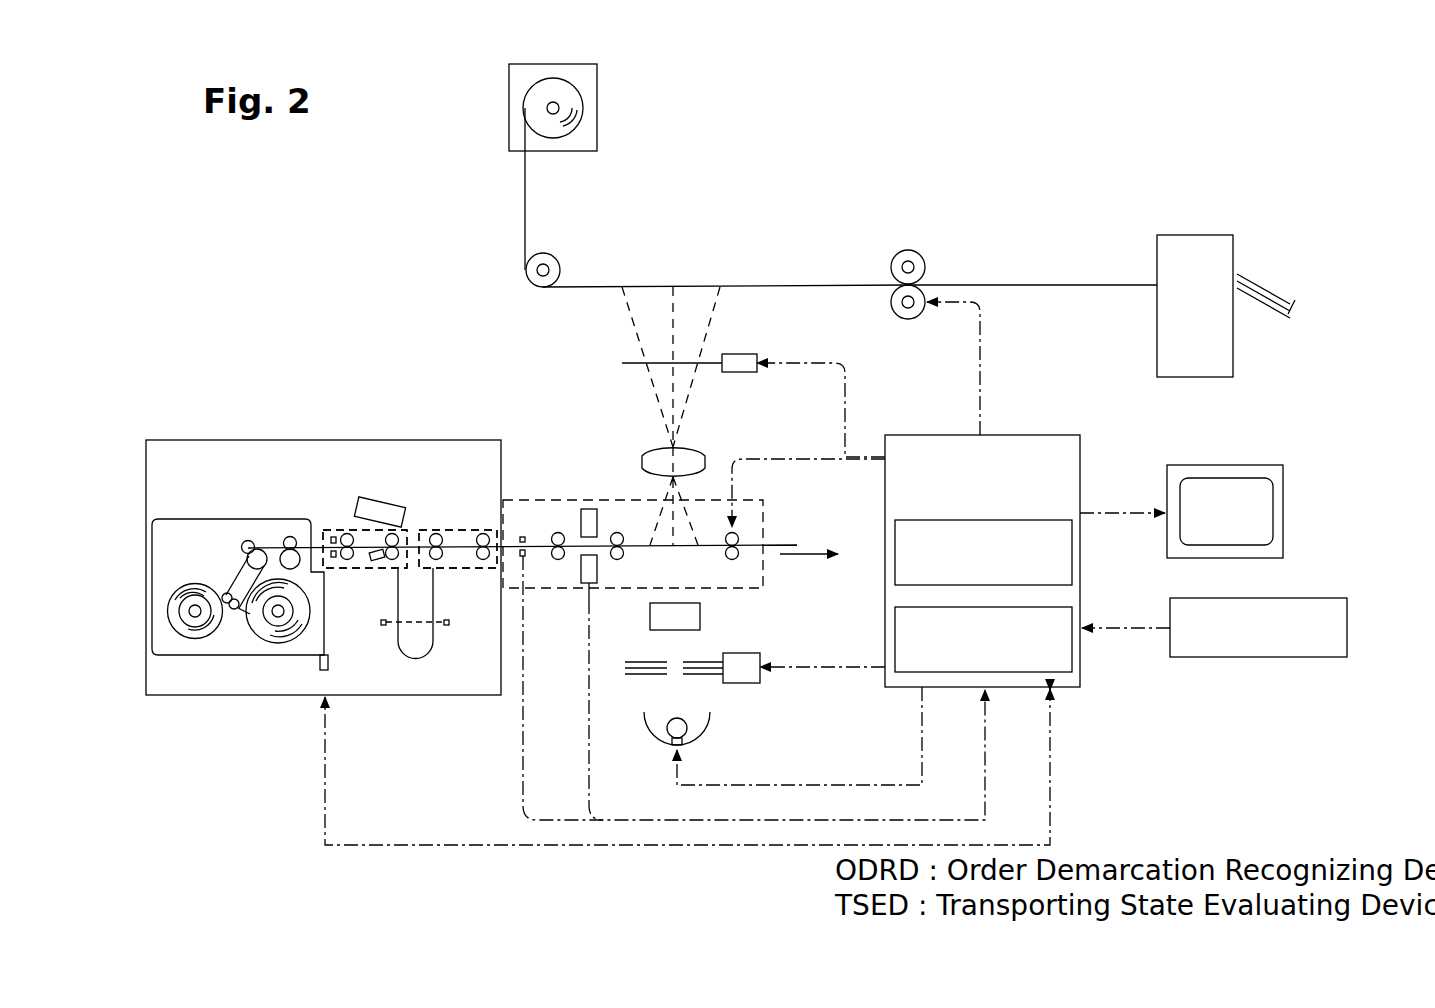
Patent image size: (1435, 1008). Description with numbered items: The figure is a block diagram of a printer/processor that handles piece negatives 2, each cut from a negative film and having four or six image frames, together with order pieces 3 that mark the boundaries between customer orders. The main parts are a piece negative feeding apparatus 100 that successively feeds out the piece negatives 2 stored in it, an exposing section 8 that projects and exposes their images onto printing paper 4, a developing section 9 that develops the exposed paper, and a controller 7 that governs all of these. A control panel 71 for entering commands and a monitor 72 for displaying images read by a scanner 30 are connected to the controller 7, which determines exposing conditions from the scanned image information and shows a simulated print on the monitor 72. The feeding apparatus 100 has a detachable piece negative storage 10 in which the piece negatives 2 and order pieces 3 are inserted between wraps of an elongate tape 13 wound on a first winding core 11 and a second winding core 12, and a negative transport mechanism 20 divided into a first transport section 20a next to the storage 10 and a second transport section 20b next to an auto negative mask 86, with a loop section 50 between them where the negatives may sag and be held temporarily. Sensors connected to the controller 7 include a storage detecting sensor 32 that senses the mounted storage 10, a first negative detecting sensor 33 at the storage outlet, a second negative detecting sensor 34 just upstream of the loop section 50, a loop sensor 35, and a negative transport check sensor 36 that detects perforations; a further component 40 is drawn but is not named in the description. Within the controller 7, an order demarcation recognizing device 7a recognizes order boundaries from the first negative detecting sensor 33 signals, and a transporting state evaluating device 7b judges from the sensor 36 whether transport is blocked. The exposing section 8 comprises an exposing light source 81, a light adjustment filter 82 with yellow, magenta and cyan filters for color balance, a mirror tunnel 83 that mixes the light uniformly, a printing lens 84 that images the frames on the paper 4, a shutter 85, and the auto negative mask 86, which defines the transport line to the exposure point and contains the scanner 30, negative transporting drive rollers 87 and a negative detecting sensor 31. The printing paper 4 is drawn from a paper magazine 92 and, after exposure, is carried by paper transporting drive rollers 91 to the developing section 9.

The piece negative feeding apparatus 100 is at (232, 438).
The piece negative storage 10 is at (198, 516).
The first winding core 11 is at (280, 615).
The second winding core 12 is at (197, 615).
The elongate tape 13 is at (289, 572).
The piece negative 2 is at (312, 545).
The negative transport mechanism 20 is at (427, 400).
The first transport section 20a is at (345, 530).
The second transport section 20b is at (430, 530).
The scanner 30 is at (581, 578).
The negative detecting sensor 31 is at (522, 537).
The storage detecting sensor 32 is at (330, 662).
The first negative detecting sensor 33 is at (333, 534).
The second negative detecting sensor 34 is at (377, 560).
The loop sensor 35 is at (449, 626).
The negative transport check sensor 36 is at (458, 530).
The film reading unit 40 is at (384, 505).
The loop section 50 is at (419, 661).
The order piece 3 is at (777, 540).
The printing paper 4 is at (523, 205).
The controller 7 is at (747, 609).
The order demarcation recognizing device 7a is at (1073, 567).
The transporting state evaluating device 7b is at (1073, 655).
The exposing section 8 is at (540, 384).
The developing section 9 is at (1205, 235).
The control panel 71 is at (1233, 658).
The monitor 72 is at (1210, 462).
The exposing light source 81 is at (700, 734).
The light adjustment filter 82 is at (690, 660).
The mirror tunnel 83 is at (650, 610).
The printing lens 84 is at (642, 458).
The shutter 85 is at (708, 352).
The auto negative mask 86 is at (763, 588).
The negative transporting drive rollers 87 is at (558, 532).
The paper transporting drive rollers 91 is at (553, 256).
The paper magazine 92 is at (598, 106).